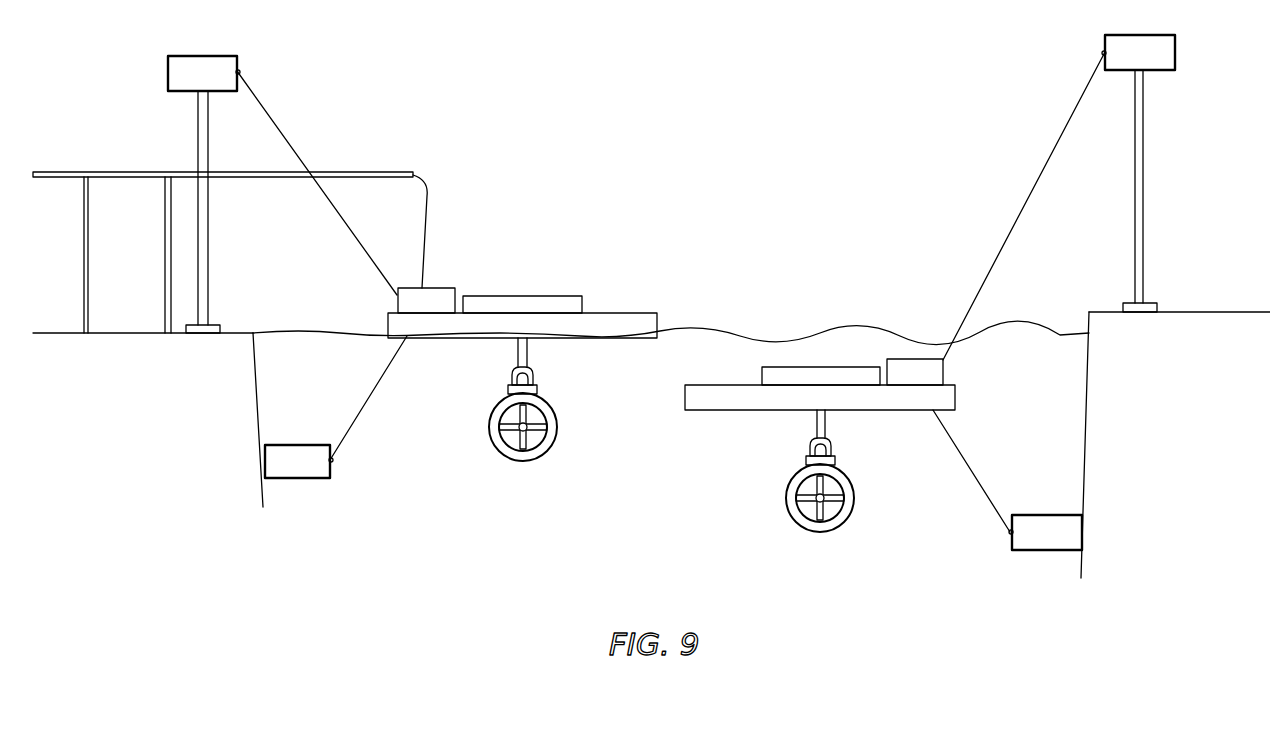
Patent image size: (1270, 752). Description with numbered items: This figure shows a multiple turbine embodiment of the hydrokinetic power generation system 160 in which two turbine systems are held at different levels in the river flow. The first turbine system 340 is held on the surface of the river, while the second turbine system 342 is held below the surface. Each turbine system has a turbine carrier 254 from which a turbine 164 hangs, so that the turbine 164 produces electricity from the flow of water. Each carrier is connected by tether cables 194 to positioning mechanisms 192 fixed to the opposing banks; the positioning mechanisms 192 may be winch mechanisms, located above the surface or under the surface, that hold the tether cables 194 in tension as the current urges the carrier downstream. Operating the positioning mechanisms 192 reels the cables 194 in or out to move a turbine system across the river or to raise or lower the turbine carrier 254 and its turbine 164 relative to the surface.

The hydrokinetic power generation system 160 is at (629, 515).
The turbine 164 is at (571, 432).
The positioning mechanism 192 is at (222, 85).
The tether cable 194 is at (281, 131).
The turbine carrier 254 is at (442, 340).
The turbine system 340 is at (545, 260).
The turbine system 342 is at (812, 316).